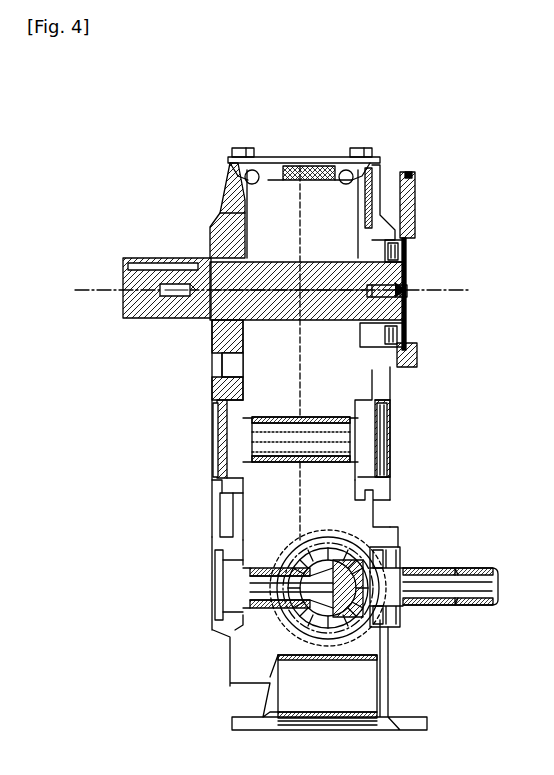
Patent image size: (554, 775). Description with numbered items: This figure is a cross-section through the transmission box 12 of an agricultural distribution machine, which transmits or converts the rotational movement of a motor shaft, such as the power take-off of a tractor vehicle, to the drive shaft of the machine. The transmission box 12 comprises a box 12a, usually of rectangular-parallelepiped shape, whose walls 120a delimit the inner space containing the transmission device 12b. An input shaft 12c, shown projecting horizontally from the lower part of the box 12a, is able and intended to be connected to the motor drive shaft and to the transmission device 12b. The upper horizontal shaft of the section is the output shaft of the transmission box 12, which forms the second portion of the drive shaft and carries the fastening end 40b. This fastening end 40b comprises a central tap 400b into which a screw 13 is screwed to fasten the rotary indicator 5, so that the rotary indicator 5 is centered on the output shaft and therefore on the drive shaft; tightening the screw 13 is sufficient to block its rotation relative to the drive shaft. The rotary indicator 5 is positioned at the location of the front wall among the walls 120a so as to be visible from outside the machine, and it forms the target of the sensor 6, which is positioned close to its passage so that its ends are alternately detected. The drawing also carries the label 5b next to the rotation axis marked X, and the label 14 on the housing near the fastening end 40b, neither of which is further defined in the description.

The box 12a is at (232, 213).
The walls 120a is at (378, 210).
The sensor 6 is at (418, 190).
The rotary indicator 5 is at (407, 250).
The central tap 400b is at (405, 274).
The screw 13 is at (408, 290).
The shaft 5b is at (407, 300).
The fastening end 40b is at (407, 312).
The housing wall 14 is at (403, 310).
The transmission device 12b is at (272, 482).
The transmission box 12 is at (402, 508).
The input shaft 12c is at (470, 606).